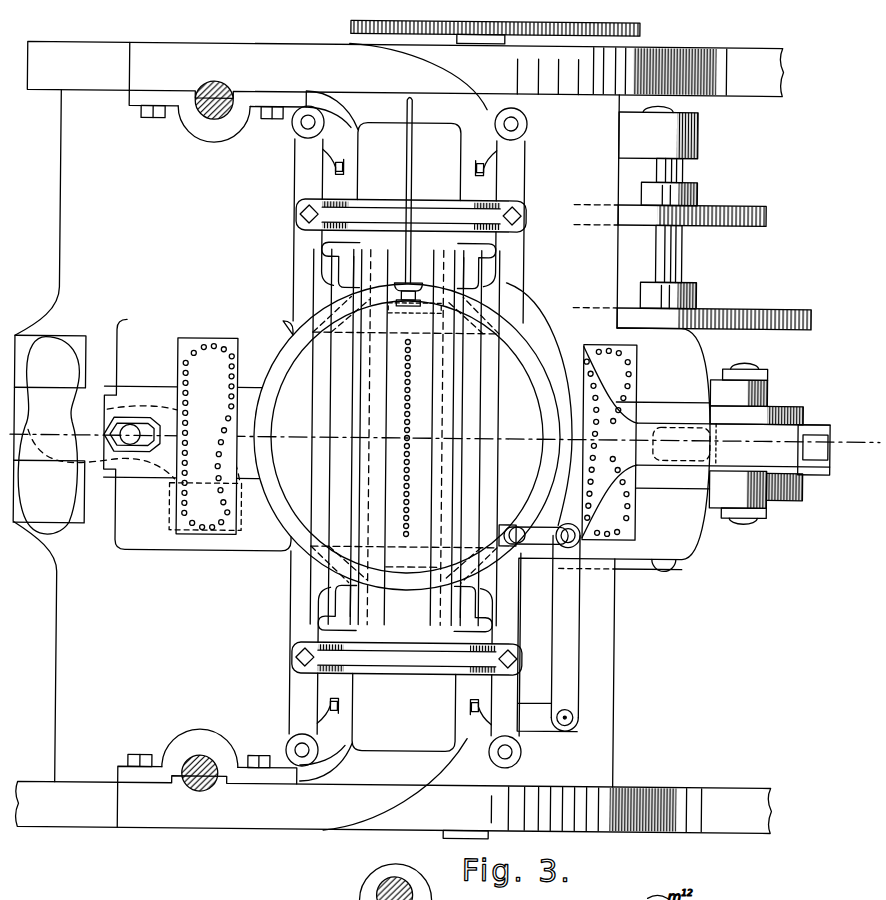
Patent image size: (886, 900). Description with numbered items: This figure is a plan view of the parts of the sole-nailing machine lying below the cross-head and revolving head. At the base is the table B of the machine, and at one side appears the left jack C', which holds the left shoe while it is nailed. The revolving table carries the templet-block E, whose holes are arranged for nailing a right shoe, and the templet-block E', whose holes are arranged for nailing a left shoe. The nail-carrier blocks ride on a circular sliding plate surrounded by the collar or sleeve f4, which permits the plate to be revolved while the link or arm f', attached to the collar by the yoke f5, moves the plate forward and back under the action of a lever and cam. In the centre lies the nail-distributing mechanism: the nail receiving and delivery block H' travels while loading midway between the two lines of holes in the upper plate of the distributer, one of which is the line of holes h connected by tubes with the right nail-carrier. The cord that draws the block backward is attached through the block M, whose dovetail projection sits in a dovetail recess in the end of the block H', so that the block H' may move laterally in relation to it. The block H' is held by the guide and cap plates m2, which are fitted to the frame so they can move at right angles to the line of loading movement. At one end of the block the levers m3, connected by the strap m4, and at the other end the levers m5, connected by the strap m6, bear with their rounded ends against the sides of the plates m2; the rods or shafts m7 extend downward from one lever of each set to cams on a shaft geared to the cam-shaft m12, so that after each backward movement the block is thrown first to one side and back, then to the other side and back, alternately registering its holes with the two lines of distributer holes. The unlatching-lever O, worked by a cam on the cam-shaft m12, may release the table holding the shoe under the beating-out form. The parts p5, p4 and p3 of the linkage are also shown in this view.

The table B is at (268, 651).
The left jack C' is at (127, 425).
The collar or sleeve f4 is at (284, 508).
The templet-block E is at (206, 436).
The block M is at (427, 292).
The guide and cap plates m2 is at (336, 498).
The line of holes h is at (409, 446).
The nail receiving and delivery block H' is at (407, 437).
The levers m5 is at (293, 180).
The rods or shafts m7 is at (525, 123).
The strap m6 is at (391, 201).
The levers m3 is at (293, 695).
The strap m4 is at (396, 677).
The yoke f5 is at (539, 302).
The templet-block E' is at (610, 443).
The link or arm f' is at (733, 443).
The cam-shaft m12 is at (693, 218).
The unlatching-lever O is at (736, 209).
The link p5 is at (543, 525).
The connecting rod p4 is at (569, 620).
The pin p3 is at (577, 716).